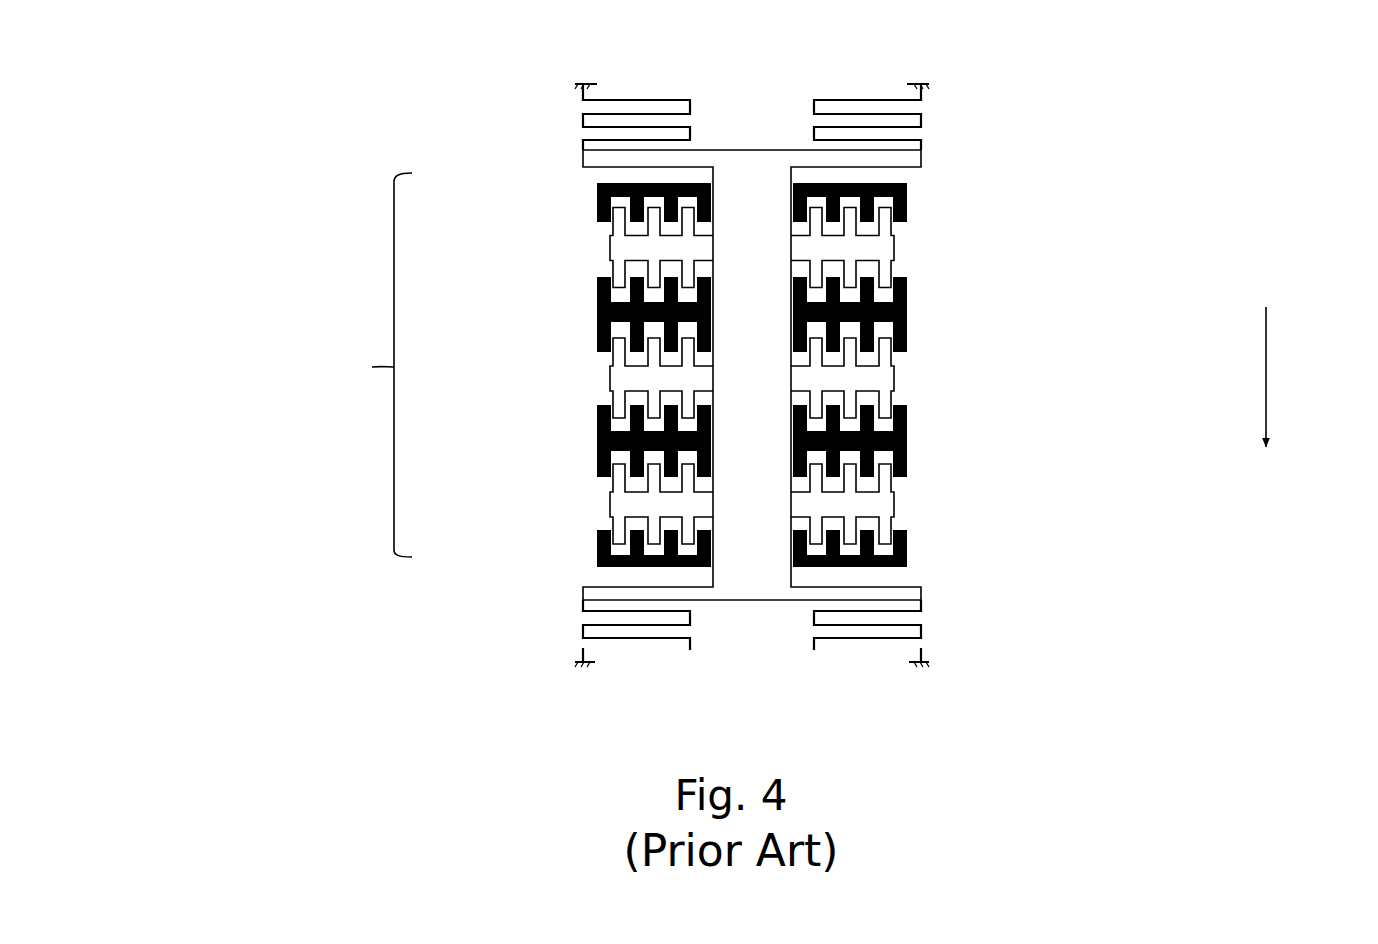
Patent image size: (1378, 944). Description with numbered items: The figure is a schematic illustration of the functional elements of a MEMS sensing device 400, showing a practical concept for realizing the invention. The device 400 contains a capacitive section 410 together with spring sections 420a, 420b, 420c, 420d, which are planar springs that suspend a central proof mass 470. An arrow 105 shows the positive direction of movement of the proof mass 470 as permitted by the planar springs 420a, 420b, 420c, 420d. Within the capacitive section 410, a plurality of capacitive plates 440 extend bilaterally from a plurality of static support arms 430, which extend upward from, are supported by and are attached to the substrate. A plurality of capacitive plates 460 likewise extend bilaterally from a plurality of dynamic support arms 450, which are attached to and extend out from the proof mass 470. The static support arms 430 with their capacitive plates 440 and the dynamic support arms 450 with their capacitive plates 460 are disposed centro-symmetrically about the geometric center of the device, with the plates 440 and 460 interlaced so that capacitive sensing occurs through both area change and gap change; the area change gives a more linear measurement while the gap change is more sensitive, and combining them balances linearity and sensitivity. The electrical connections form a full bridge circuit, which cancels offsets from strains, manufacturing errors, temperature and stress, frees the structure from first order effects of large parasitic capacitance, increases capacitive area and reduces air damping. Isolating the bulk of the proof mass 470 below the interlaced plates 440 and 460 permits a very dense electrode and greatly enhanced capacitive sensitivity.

The device 400 is at (240, 148).
The capacitive section 410 is at (362, 368).
The spring section 420a is at (555, 125).
The spring section 420b is at (915, 120).
The spring section 420c is at (565, 633).
The spring section 420d is at (912, 622).
The support arms 430 is at (597, 437).
The capacitive plates 440 is at (913, 287).
The support arms 450 is at (598, 249).
The capacitive plates 460 is at (893, 357).
The proof mass 470 is at (755, 588).
The arrow 105 is at (1278, 399).